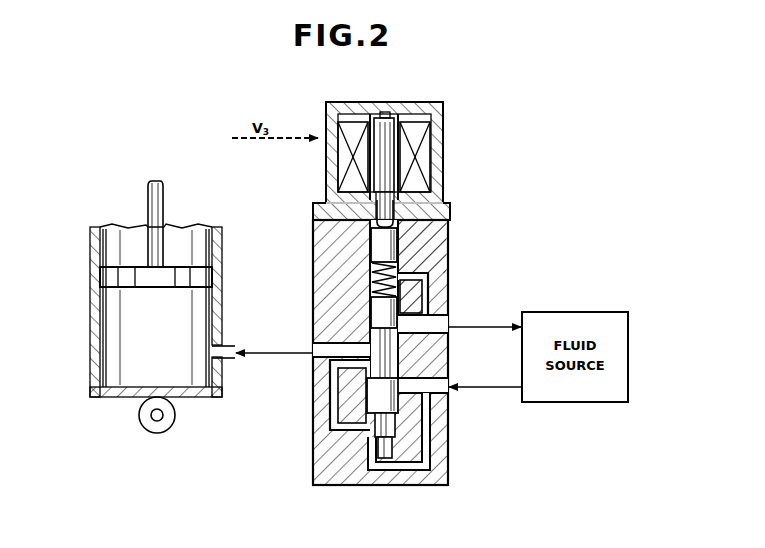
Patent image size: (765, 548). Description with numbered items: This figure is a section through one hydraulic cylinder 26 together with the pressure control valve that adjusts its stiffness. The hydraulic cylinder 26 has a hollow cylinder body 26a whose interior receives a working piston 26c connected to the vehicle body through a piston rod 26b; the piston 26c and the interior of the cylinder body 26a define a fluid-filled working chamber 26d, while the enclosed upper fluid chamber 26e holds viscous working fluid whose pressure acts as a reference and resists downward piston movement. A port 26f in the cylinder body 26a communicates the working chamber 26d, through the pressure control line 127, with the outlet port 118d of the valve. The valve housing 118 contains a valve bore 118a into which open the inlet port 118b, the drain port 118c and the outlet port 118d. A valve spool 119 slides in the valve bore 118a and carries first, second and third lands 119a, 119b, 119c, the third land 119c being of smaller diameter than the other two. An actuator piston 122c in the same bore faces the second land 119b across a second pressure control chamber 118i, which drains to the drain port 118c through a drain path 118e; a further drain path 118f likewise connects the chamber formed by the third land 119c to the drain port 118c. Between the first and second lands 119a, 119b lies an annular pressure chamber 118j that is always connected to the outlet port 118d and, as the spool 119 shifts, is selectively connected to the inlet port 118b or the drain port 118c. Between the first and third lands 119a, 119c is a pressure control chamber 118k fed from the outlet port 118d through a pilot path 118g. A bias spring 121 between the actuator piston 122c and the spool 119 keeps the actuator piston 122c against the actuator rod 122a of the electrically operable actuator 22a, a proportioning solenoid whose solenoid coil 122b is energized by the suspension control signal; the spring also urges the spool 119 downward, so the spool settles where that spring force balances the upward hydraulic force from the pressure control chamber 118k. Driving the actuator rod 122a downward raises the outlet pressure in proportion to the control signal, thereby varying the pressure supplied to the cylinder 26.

The electrically operable actuator 22a is at (444, 135).
The actuator rod 122a is at (392, 206).
The solenoid coil 122b is at (416, 128).
The actuator piston 122c is at (372, 228).
The valve housing 118 is at (319, 488).
The valve bore 118a is at (372, 243).
The inlet port 118b is at (450, 390).
The drain port 118c is at (430, 310).
The outlet port 118d is at (345, 348).
The drain path 118e is at (426, 278).
The drain path 118f is at (410, 470).
The pilot path 118g is at (352, 428).
The second pressure control chamber 118i is at (428, 252).
The annular pressure chamber 118j is at (449, 326).
The pressure control chamber 118k is at (381, 458).
The valve spool 119 is at (345, 400).
The first land 119a is at (368, 388).
The second land 119b is at (372, 311).
The third land 119c is at (376, 433).
The spring 121 is at (380, 279).
The fluid conduit 127 is at (250, 359).
The hydraulic cylinder 26 is at (90, 325).
The cylinder body 26a is at (95, 350).
The piston rod 26b is at (155, 203).
The working piston 26c is at (160, 280).
The working chamber 26d is at (135, 362).
The upper fluid chamber 26e is at (122, 248).
The port 26f is at (243, 348).